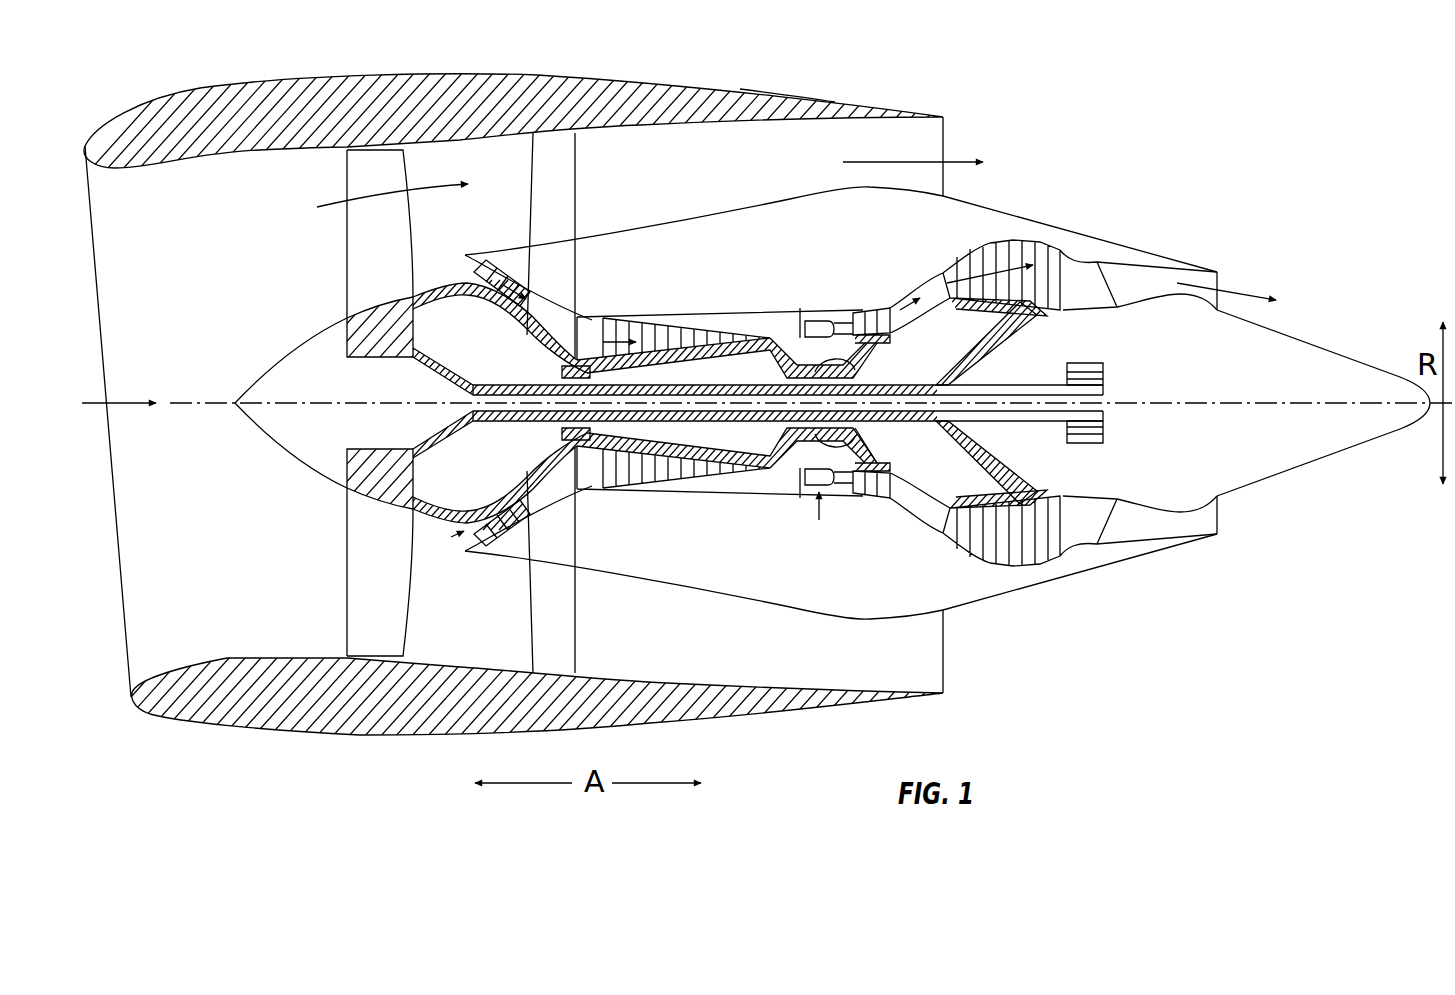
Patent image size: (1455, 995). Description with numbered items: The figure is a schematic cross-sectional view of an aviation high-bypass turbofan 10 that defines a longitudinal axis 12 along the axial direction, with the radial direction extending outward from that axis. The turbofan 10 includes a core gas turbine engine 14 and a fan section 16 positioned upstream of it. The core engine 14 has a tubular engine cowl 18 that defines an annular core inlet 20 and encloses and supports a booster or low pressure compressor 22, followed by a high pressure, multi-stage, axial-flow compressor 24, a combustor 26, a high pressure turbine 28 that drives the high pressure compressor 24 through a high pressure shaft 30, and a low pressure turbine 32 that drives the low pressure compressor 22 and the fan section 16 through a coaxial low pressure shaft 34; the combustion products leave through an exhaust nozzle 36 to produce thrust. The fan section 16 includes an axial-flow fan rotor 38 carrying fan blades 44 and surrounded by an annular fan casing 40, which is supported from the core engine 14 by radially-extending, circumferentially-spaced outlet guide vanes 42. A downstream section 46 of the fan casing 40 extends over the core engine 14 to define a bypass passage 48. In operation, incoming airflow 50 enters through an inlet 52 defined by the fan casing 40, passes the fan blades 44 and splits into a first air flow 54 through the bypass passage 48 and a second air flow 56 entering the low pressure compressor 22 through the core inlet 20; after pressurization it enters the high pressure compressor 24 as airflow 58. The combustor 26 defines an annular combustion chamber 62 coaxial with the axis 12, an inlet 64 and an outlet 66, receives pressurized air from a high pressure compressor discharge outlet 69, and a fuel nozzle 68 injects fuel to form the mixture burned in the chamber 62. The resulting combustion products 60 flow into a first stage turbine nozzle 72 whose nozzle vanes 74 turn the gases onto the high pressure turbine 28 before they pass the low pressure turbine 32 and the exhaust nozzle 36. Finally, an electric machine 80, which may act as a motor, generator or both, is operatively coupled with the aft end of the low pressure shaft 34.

The turbofan 10 is at (1110, 102).
The longitudinal axis 12 is at (1110, 400).
The core gas turbine engine 14 is at (824, 256).
The fan section 16 is at (390, 56).
The engine cowl 18 is at (757, 604).
The core inlet 20 is at (452, 538).
The low pressure compressor 22 is at (528, 493).
The high pressure compressor 24 is at (613, 480).
The combustor 26 is at (813, 512).
The high pressure turbine 28 is at (908, 482).
The high pressure shaft 30 is at (868, 362).
The low pressure turbine 32 is at (1033, 567).
The low pressure shaft 34 is at (527, 385).
The exhaust nozzle 36 is at (1214, 268).
The fan rotor 38 is at (405, 360).
The fan casing 40 is at (355, 735).
The outlet guide vanes 42 is at (578, 162).
The fan blades 44 is at (347, 602).
The downstream section 46 is at (785, 93).
The bypass passage 48 is at (736, 169).
The incoming airflow 50 is at (118, 400).
The inlet 52 is at (125, 653).
The first air flow 54 is at (365, 193).
The second air flow 56 is at (443, 275).
The airflow into HP compressor 58 is at (600, 318).
The combustion products 60 is at (868, 305).
The combustion chamber 62 is at (820, 521).
The combustor inlet 64 is at (797, 328).
The combustor outlet 66 is at (852, 318).
The fuel nozzle 68 is at (787, 311).
The high pressure compressor discharge outlet 69 is at (782, 497).
The first stage turbine nozzle 72 is at (842, 497).
The nozzle vanes 74 is at (827, 450).
The electric machine 80 is at (1103, 440).